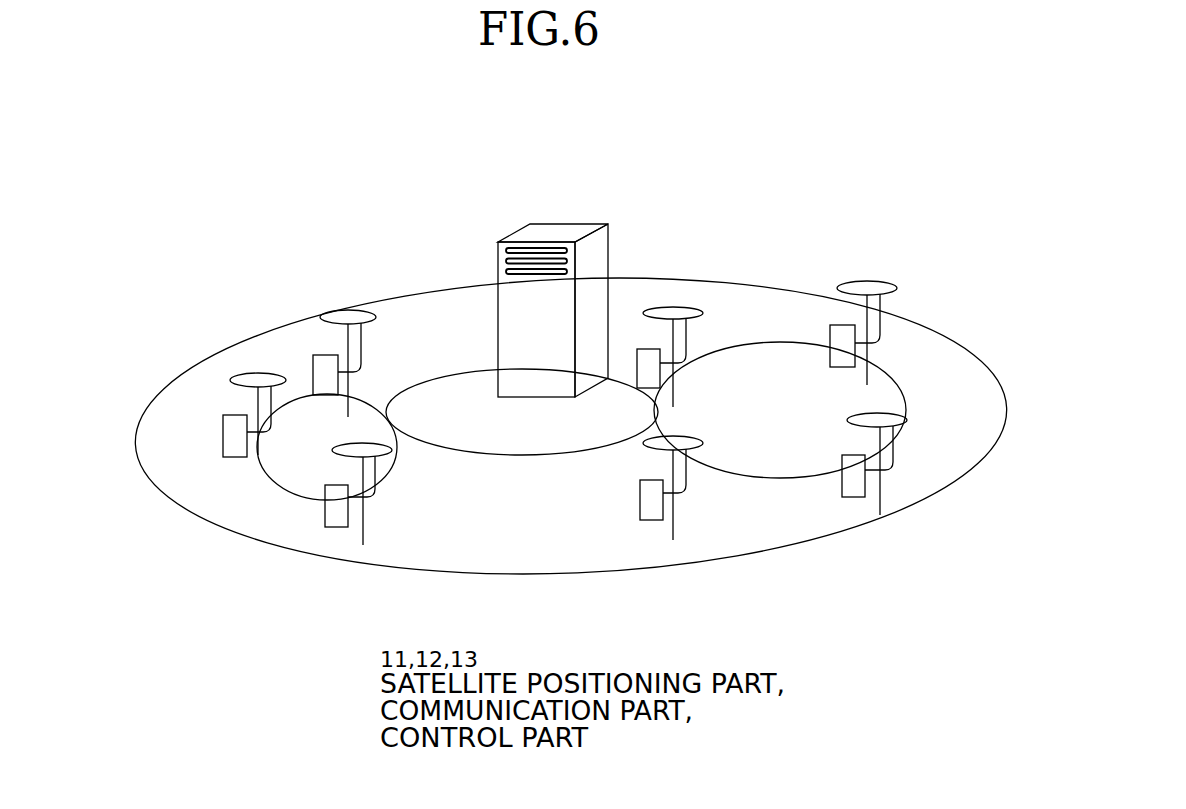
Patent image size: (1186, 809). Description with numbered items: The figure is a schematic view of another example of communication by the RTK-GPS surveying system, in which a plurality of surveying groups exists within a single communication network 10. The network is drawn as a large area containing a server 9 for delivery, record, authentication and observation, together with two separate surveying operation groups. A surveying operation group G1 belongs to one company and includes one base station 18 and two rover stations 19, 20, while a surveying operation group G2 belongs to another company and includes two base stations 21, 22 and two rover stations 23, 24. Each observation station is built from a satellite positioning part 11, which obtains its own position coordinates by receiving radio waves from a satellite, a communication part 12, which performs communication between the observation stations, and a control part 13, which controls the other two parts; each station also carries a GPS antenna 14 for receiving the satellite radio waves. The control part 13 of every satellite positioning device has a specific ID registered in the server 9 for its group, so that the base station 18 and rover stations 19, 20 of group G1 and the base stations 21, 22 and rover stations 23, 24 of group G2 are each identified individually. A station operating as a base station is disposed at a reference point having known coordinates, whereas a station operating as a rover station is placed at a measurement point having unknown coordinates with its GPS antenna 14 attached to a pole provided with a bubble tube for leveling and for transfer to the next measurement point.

The server 9 is at (548, 233).
The communication network 10 is at (583, 558).
The satellite positioning part 11 is at (545, 415).
The communication part 12 is at (545, 415).
The control part 13 is at (545, 415).
The GPS antenna 14 is at (545, 415).
The base station 18 is at (355, 309).
The rover station 19 is at (213, 397).
The rover station 20 is at (392, 483).
The base station 21 is at (689, 301).
The base station 22 is at (892, 280).
The rover station 23 is at (692, 425).
The rover station 24 is at (862, 514).
The surveying operation group G1 is at (292, 342).
The surveying operation group G2 is at (779, 320).